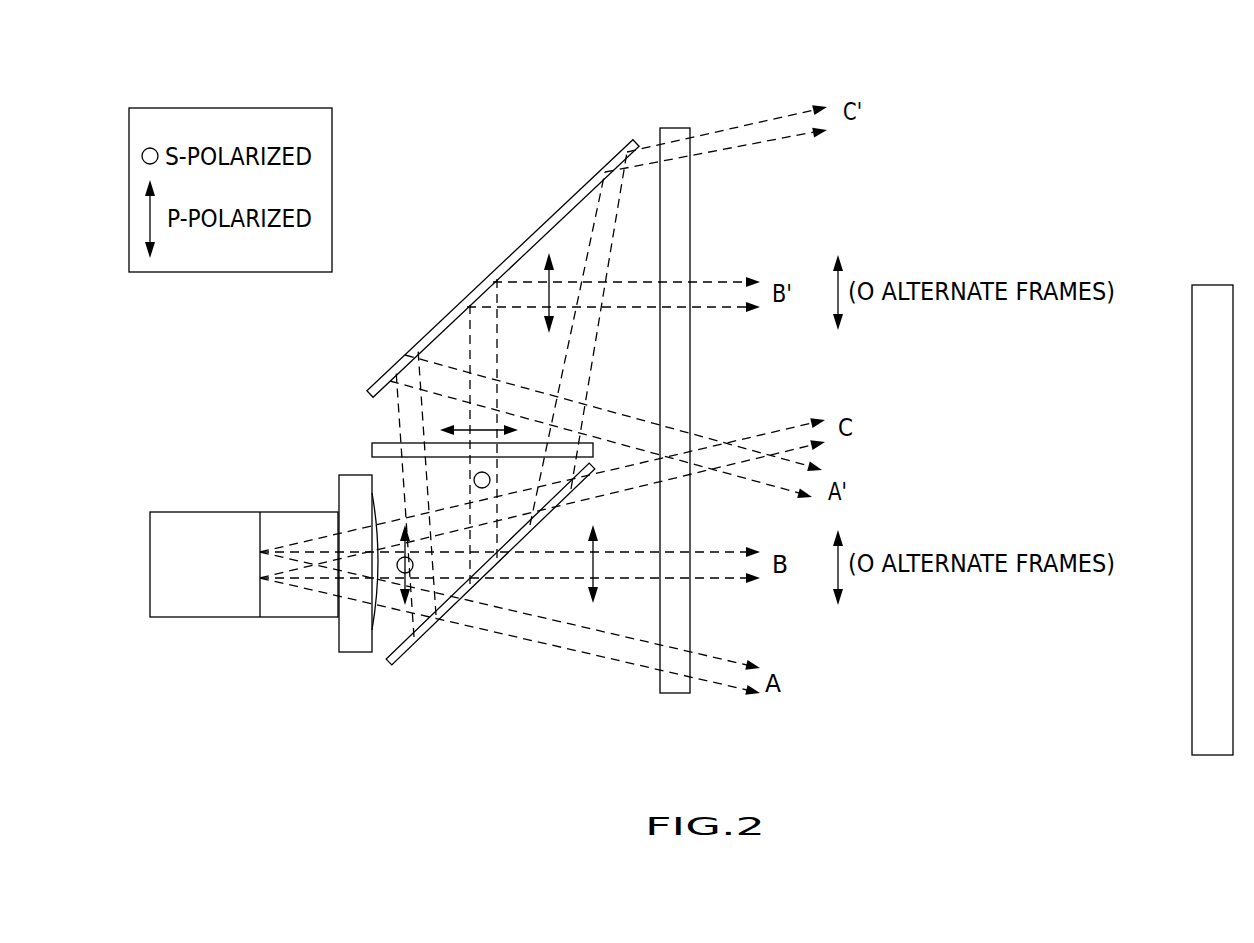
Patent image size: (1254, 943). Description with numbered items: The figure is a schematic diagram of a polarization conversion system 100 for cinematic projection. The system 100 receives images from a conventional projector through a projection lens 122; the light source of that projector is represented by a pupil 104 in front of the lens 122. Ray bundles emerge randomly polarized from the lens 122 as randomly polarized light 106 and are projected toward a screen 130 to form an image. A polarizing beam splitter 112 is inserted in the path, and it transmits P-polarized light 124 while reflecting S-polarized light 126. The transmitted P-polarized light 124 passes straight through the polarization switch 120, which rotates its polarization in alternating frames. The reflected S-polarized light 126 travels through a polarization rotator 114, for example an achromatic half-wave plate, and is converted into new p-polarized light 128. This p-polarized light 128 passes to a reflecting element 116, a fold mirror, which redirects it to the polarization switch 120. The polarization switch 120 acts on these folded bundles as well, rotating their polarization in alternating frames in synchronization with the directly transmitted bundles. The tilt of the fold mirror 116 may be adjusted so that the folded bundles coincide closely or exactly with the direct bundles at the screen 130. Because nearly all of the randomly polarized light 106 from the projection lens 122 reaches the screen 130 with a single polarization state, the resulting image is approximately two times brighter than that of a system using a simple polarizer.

The polarization conversion system 100 is at (1112, 114).
The pupil 104 is at (262, 576).
The randomly polarized light 106 is at (397, 562).
The polarizing beam splitter 112 is at (423, 636).
The polarization rotator 114 is at (372, 445).
The reflecting element 116 is at (552, 220).
The polarization switch 120 is at (675, 128).
The projection lens 122 is at (372, 628).
The P-polarized light 124 is at (594, 557).
The S-polarized light 126 is at (482, 488).
The p-polarized light 128 is at (477, 428).
The screen 130 is at (1192, 458).